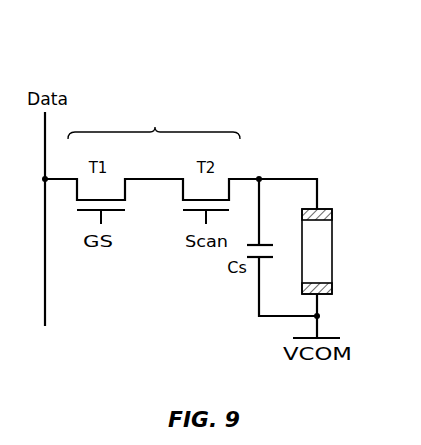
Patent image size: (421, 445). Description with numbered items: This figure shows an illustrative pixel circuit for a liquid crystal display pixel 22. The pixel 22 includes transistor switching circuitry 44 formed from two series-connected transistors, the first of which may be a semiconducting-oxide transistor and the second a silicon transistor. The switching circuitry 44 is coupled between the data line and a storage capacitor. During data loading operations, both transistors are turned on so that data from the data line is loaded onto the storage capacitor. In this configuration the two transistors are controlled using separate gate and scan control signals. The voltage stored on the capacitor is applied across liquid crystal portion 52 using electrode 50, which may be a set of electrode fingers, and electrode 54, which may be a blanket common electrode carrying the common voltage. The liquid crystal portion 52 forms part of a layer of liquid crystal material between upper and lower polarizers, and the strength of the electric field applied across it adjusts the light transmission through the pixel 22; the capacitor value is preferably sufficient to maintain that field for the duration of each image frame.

The liquid crystal display pixel 22 is at (288, 72).
The transistor switching circuitry 44 is at (154, 123).
The electrode 50 is at (332, 213).
The liquid crystal portion 52 is at (332, 248).
The electrode 54 is at (332, 291).